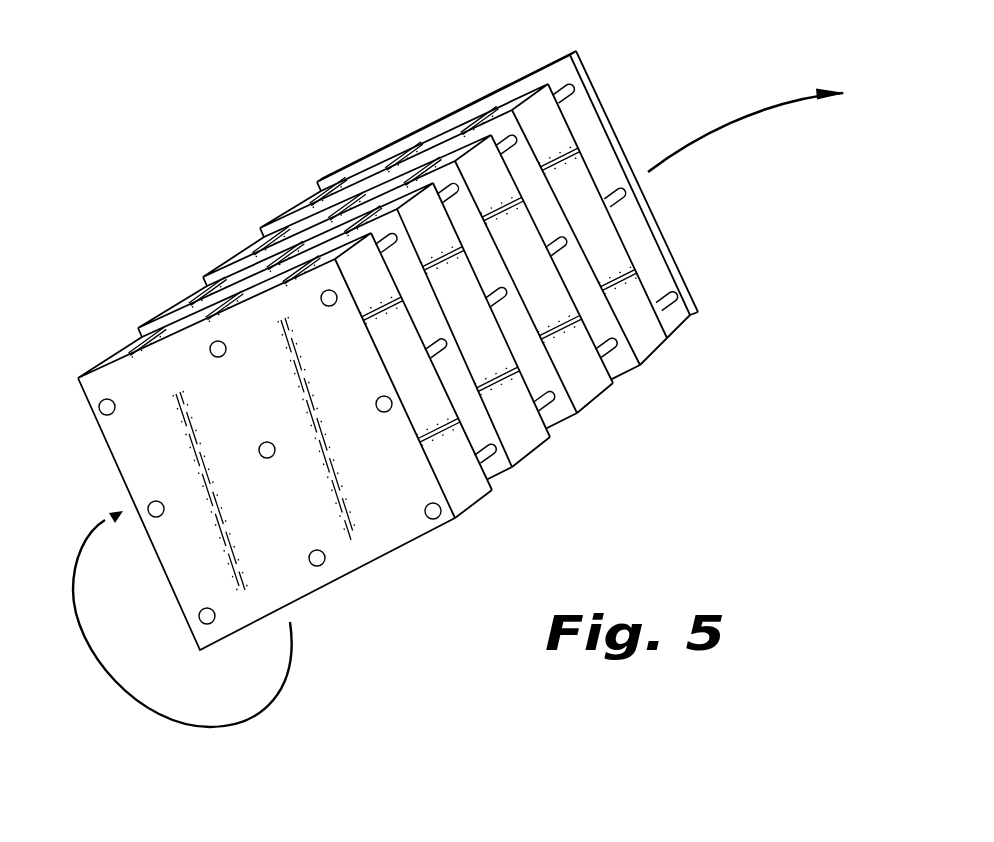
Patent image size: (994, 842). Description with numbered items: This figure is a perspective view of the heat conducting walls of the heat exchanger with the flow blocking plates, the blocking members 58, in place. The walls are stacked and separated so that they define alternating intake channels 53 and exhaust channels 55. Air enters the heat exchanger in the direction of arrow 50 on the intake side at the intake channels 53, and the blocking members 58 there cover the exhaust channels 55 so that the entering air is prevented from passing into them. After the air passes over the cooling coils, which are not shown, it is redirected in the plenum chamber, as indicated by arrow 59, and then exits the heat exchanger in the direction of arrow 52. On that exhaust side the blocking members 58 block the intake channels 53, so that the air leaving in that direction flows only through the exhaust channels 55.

The arrow 50 is at (645, 73).
The arrow 52 is at (746, 131).
The intake channels 53 is at (383, 158).
The exhaust channels 55 is at (617, 362).
The blocking members 58 is at (207, 312).
The arrow 59 is at (293, 663).